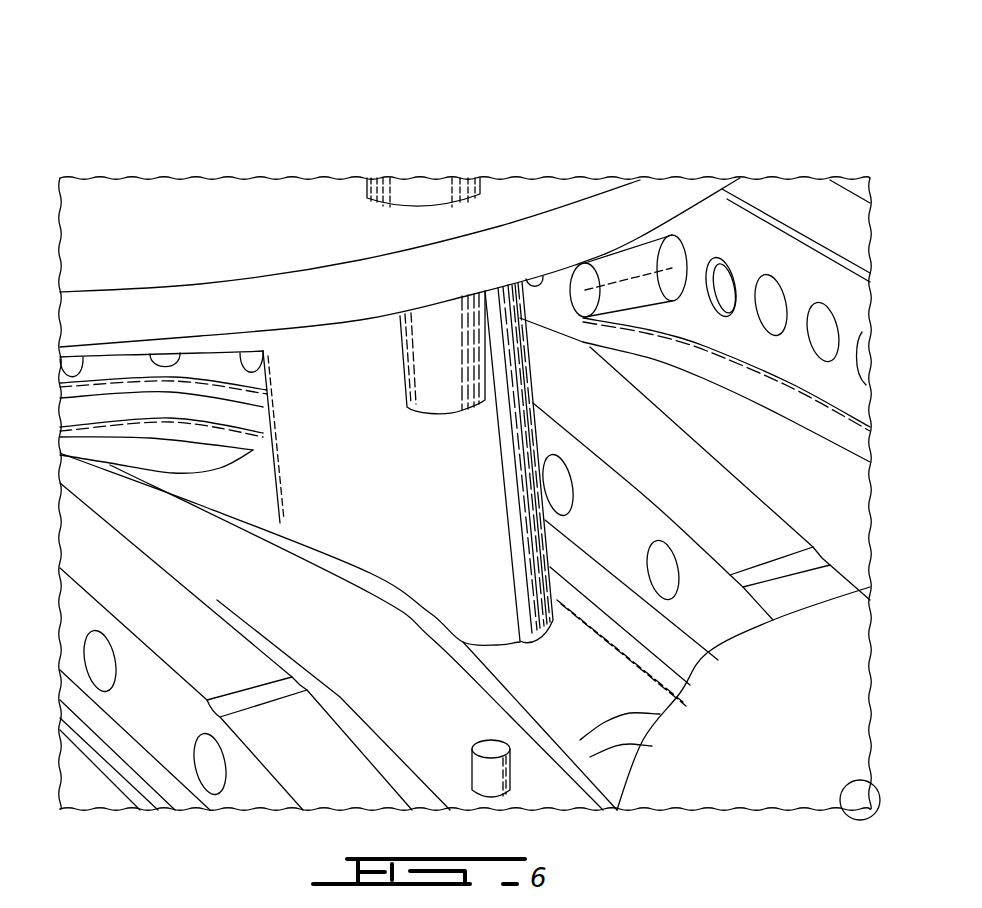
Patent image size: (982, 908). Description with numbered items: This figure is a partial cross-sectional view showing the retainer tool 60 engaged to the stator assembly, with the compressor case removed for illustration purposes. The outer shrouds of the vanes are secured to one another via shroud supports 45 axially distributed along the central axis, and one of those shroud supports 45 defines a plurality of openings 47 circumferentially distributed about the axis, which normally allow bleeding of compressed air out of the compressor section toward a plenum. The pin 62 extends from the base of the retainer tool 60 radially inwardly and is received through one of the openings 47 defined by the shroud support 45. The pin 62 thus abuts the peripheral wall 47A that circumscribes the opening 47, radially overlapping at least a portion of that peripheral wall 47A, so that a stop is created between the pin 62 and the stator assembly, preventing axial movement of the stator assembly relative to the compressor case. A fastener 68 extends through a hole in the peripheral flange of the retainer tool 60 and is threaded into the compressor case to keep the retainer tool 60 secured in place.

The retainer tool 60 is at (228, 176).
The pin 62 is at (507, 492).
The fastener 68 is at (440, 373).
The openings 47 is at (147, 447).
The peripheral wall 47A is at (207, 455).
The shroud supports 45 is at (580, 670).